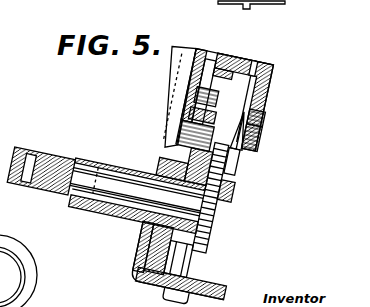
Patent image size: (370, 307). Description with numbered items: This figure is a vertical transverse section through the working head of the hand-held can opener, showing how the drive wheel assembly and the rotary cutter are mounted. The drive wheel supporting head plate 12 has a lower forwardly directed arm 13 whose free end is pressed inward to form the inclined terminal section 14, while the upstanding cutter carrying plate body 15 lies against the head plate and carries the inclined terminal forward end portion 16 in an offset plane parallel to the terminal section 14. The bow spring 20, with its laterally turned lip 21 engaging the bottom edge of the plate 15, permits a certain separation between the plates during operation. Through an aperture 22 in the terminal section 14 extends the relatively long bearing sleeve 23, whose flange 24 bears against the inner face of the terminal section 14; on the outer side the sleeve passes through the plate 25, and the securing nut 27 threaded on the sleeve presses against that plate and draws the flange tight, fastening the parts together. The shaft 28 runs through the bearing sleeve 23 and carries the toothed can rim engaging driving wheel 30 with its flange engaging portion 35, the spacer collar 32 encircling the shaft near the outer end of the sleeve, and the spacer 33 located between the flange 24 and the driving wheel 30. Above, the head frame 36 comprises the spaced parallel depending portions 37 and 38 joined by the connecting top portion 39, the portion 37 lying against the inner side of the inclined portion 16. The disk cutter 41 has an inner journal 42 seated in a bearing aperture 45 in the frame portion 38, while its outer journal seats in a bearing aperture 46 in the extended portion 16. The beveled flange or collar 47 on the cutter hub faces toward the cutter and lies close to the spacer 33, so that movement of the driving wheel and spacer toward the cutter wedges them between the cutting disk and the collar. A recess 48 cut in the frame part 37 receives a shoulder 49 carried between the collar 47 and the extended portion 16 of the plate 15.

The drive wheel supporting head plate 12 is at (198, 52).
The lower forwardly directed arm 13 is at (200, 272).
The inclined terminal section 14 is at (150, 272).
The cutter carrying plate body 15 is at (178, 50).
The inclined terminal forward end portion 16 is at (180, 92).
The bow spring 20 is at (175, 148).
The laterally turned lip 21 is at (196, 298).
The aperture 22 is at (150, 240).
The bearing sleeve 23 is at (108, 206).
The flange 24 is at (184, 258).
The plate 25 is at (152, 270).
The securing nut 27 is at (150, 166).
The shaft 28 is at (220, 206).
The can rim flange engaging driving wheel 30 is at (215, 185).
The spacer collar 32 is at (85, 157).
The spacer 33 is at (214, 228).
The flange engaging portion 35 is at (235, 192).
The head frame 36 is at (257, 58).
The depending portion 37 is at (176, 74).
The depending portion 38 is at (265, 92).
The connecting top portion 39 is at (262, 65).
The disk cutter 41 is at (242, 164).
The inner journal 42 is at (258, 136).
The bearing aperture 45 is at (262, 122).
The bearing aperture 46 is at (186, 102).
The flange or collar 47 is at (236, 104).
The recess 48 is at (223, 66).
The shoulder 49 is at (255, 61).